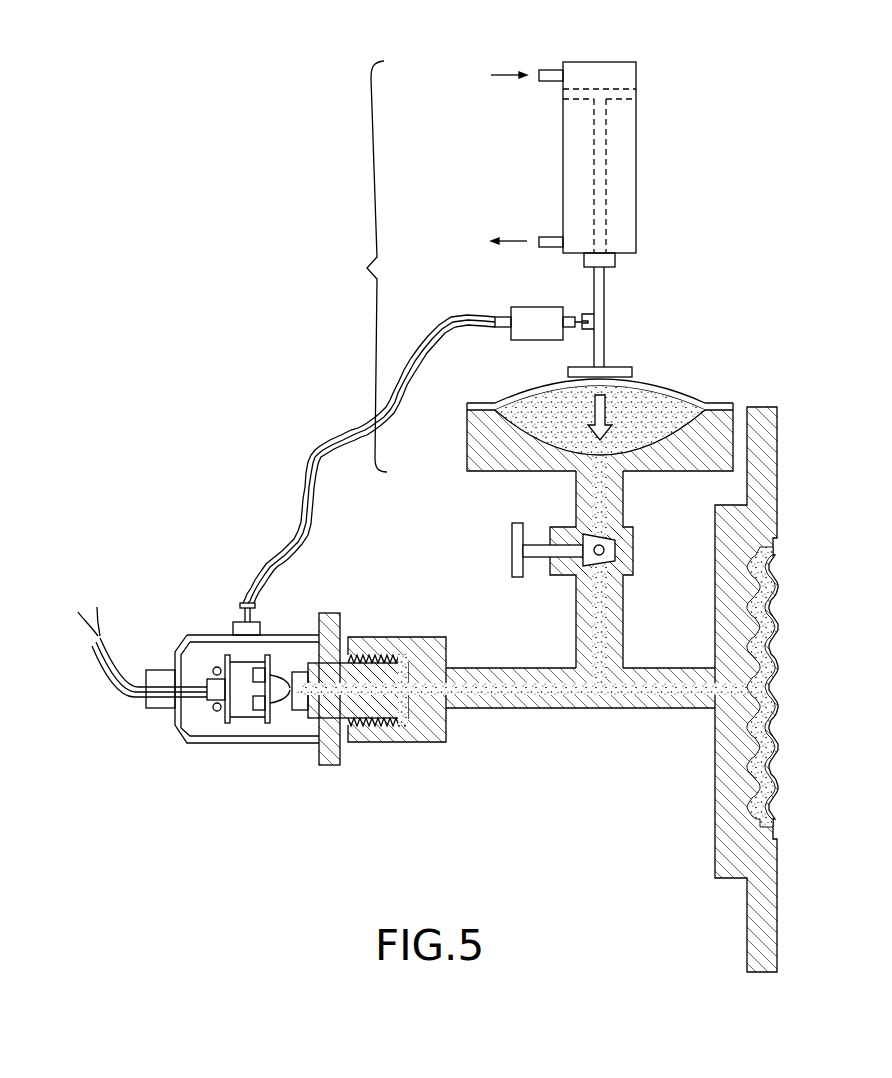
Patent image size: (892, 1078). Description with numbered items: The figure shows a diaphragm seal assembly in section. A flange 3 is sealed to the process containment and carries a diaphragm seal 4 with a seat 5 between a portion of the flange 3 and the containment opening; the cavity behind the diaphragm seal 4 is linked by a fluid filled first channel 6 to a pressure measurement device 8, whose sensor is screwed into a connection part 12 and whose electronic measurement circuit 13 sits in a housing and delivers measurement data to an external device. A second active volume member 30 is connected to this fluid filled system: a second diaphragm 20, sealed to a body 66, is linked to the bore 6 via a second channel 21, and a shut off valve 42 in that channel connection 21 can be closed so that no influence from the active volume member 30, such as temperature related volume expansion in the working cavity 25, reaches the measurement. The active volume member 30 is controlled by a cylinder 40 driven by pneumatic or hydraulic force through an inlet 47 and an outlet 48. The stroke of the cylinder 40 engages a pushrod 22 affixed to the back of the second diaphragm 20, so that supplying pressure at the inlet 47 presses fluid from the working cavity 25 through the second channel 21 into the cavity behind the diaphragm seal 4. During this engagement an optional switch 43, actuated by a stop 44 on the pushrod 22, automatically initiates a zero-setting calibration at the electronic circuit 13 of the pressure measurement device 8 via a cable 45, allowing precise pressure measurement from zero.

The flange 3 is at (740, 853).
The diaphragm seal 4 is at (775, 742).
The seat 5 is at (746, 750).
The first channel 6 is at (665, 688).
The pressure measurement device 8 is at (266, 783).
The connection part 12 is at (423, 653).
The electronic measurement circuit 13 is at (246, 698).
The second diaphragm 20 is at (685, 398).
The second channel 21 is at (598, 642).
The pushrod 22 is at (605, 288).
The working cavity 25 is at (640, 415).
The active volume member 30 is at (363, 266).
The cylinder 40 is at (636, 157).
The shut off valve 42 is at (537, 538).
The switch 43 is at (520, 312).
The stop 44 is at (588, 313).
The cable 45 is at (305, 470).
The inlet 47 is at (547, 70).
The outlet 48 is at (543, 237).
The body 66 is at (485, 440).